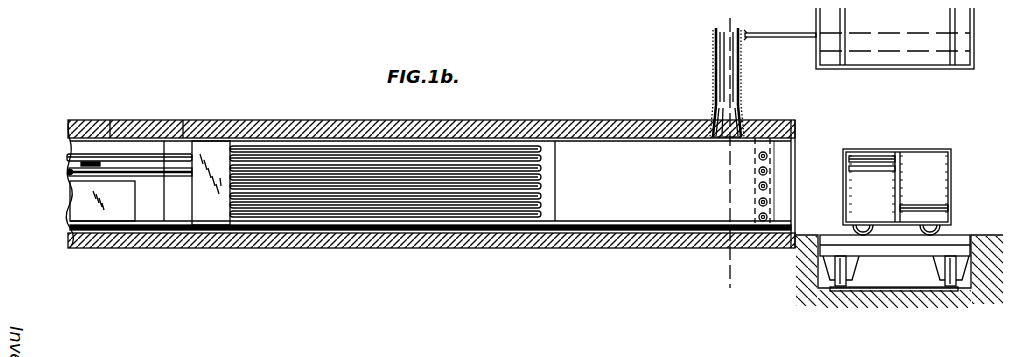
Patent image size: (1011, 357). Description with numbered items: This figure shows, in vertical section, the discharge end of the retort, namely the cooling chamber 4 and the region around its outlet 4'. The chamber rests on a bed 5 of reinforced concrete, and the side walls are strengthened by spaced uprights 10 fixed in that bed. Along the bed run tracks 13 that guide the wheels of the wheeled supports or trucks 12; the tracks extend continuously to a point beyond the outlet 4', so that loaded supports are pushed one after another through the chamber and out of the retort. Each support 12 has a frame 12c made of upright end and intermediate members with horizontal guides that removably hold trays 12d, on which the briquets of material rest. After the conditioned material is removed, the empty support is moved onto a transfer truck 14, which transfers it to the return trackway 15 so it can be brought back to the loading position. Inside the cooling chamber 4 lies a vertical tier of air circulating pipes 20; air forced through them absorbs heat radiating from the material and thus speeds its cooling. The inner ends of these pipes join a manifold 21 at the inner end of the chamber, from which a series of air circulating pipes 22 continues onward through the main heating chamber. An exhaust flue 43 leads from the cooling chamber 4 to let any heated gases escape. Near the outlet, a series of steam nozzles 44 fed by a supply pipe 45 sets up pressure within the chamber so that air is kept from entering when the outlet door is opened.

The cooling chamber 4 is at (430, 184).
The outlet from the cooling chamber 4' is at (795, 181).
The bed or foundation 5 is at (245, 236).
The uprights 10 is at (730, 160).
The wheeled supports or trucks 12 is at (885, 192).
The frame 12c is at (943, 169).
The trays 12d is at (867, 161).
The tracks 13 is at (619, 219).
The transfer truck 14 is at (946, 234).
The return trackway 15 is at (767, 27).
The air circulating pipes 20 is at (372, 150).
The manifold 21 is at (206, 136).
The air circulating pipes 22 is at (62, 165).
The exhaust flue 43 is at (707, 60).
The steam nozzles 44 is at (749, 178).
The supply pipe 45 is at (765, 150).